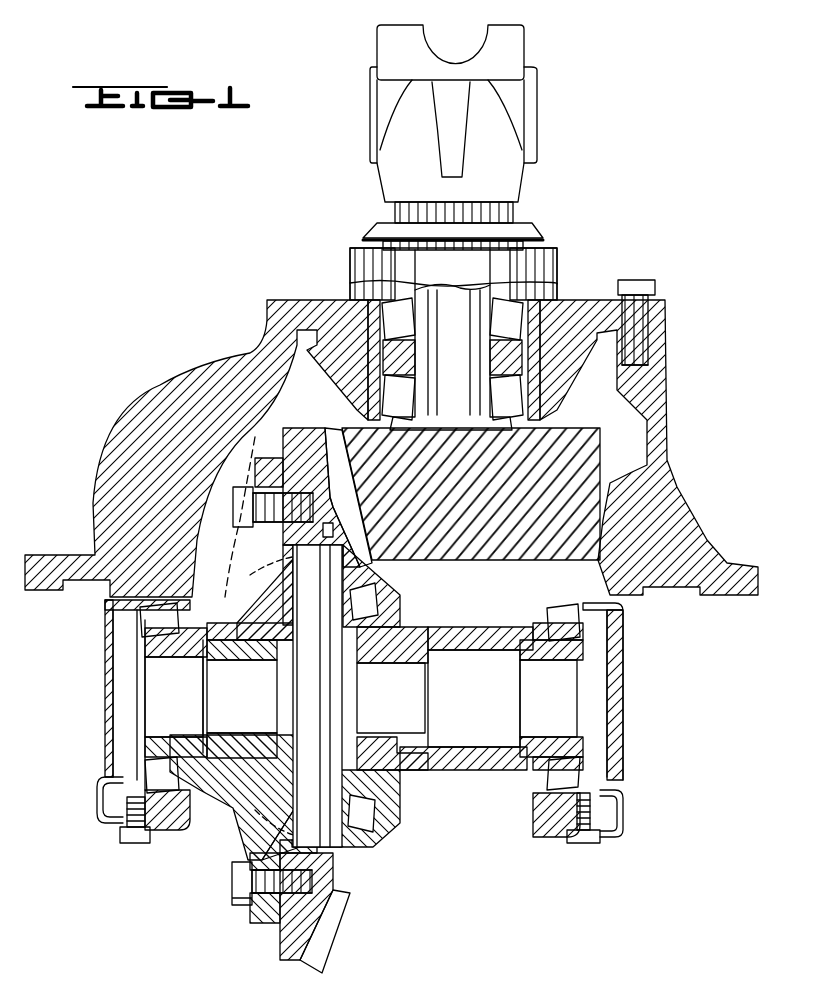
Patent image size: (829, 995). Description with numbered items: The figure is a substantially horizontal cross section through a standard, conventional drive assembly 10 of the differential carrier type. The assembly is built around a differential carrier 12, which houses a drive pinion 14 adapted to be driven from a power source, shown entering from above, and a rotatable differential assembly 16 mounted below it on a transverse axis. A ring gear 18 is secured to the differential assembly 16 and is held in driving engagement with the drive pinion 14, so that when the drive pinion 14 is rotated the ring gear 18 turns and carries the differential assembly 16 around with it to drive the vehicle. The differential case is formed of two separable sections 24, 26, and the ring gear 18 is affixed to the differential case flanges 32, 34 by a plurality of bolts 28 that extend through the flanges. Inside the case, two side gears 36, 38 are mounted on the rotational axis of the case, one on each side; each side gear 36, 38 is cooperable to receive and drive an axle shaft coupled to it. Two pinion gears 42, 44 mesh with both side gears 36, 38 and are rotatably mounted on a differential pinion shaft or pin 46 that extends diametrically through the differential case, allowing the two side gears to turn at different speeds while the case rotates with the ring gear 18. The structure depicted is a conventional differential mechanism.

The drive assembly 10 is at (178, 370).
The differential carrier 12 is at (668, 418).
The drive pinion 14 is at (553, 438).
The differential assembly 16 is at (425, 612).
The ring gear 18 is at (322, 436).
The separable section 24 is at (252, 560).
The separable section 26 is at (378, 578).
The bolts 28 is at (240, 884).
The differential case flange 32 is at (262, 484).
The differential case flange 34 is at (270, 456).
The side gear 36 is at (264, 655).
The side gear 38 is at (388, 660).
The pinion gear 42 is at (280, 600).
The pinion gear 44 is at (293, 793).
The differential pinion shaft 46 is at (317, 696).